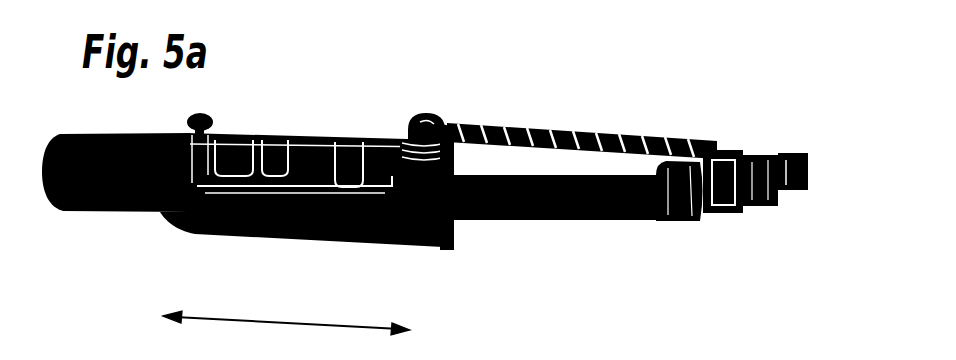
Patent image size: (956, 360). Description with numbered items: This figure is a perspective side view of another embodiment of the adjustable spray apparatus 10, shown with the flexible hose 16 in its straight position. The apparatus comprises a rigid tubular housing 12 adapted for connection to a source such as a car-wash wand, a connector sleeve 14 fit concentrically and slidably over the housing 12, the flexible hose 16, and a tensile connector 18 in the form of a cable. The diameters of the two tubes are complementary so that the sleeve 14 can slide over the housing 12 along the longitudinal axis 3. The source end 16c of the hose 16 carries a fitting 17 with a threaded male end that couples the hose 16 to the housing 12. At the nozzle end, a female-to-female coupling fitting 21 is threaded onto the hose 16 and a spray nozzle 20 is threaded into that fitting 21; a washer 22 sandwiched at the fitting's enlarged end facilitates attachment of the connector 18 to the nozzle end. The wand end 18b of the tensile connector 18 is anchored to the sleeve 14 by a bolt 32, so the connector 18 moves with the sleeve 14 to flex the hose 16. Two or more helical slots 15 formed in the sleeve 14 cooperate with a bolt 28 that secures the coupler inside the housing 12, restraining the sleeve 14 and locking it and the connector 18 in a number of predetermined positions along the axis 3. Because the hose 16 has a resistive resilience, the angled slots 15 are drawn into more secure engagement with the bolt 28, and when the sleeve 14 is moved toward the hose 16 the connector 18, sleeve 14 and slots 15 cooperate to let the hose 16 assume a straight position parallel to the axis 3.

The adjustable spray apparatus 10 is at (677, 70).
The housing 12 is at (110, 213).
The connector sleeve 14 is at (283, 237).
The adjusting helical slots 15 is at (220, 170).
The flexible hose 16 is at (583, 221).
The source end 16c is at (452, 222).
The fitting 17 is at (697, 213).
The tensile connector 18 is at (583, 128).
The wand end 18b is at (446, 132).
The spray nozzle 20 is at (798, 158).
The coupling fitting 21 is at (770, 193).
The washer 22 is at (748, 157).
The bolt 28 is at (205, 125).
The bolt 32 is at (423, 114).
The longitudinal axis 3 is at (237, 320).